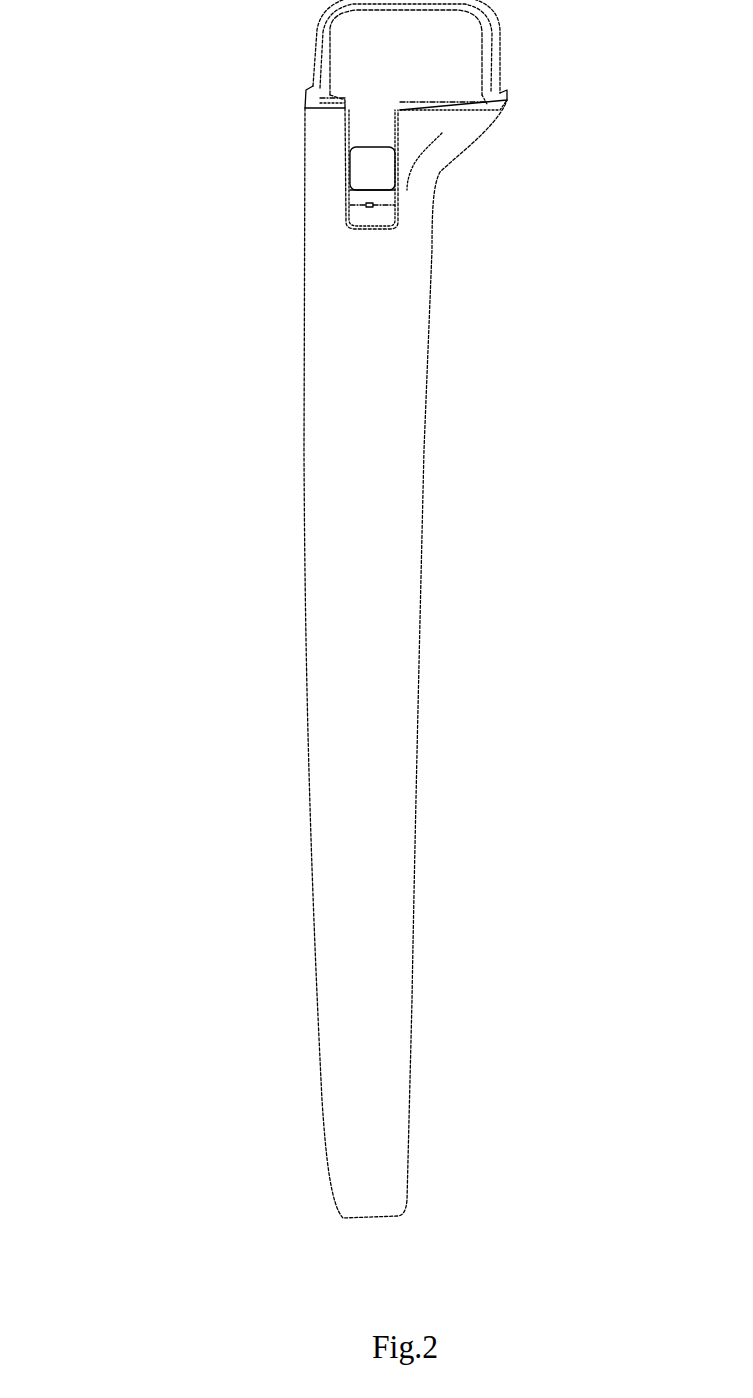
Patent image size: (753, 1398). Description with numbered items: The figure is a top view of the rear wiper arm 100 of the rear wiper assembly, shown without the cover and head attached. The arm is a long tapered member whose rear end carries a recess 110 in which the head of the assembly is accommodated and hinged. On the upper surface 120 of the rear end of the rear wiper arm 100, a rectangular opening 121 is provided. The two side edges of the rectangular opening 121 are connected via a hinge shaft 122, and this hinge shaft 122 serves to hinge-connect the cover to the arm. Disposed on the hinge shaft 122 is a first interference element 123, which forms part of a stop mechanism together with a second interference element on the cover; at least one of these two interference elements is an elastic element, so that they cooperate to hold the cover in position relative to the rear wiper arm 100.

The rear wiper arm 100 is at (192, 182).
The recess 110 is at (430, 70).
The upper surface 120 is at (333, 250).
The rectangular opening 121 is at (383, 217).
The hinge shaft 122 is at (383, 198).
The first interference element 123 is at (367, 203).